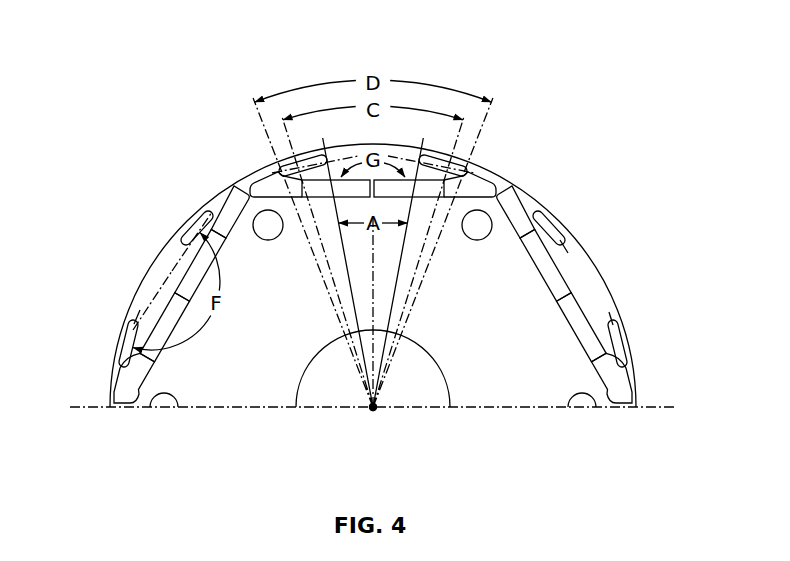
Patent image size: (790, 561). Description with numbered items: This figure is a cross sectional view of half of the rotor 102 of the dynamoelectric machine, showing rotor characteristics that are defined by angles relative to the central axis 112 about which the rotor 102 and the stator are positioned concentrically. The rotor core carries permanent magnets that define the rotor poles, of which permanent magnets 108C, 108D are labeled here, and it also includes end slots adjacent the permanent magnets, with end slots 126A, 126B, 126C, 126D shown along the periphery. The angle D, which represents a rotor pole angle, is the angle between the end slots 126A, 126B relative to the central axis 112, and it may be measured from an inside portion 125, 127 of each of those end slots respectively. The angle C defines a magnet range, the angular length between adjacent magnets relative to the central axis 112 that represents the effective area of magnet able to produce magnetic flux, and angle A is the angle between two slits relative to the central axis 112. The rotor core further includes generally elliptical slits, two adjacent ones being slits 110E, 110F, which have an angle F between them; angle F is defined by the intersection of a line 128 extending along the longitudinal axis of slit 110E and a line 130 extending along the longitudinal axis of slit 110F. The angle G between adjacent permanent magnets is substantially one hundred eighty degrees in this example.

The rotor 102 is at (126, 121).
The permanent magnet 108C is at (542, 284).
The permanent magnet 108D is at (577, 333).
The slit 110E is at (125, 347).
The slit 110F is at (198, 229).
The central axis 112 is at (373, 409).
The inside portion of end slot 125 is at (280, 168).
The end slot 126A is at (258, 184).
The end slot 126B is at (497, 191).
The end slot 126C is at (520, 207).
The end slot 126D is at (611, 388).
The inside portion of end slot 127 is at (484, 182).
The line along longitudinal axis of slit 128 is at (138, 308).
The line along longitudinal axis of slit 130 is at (173, 256).